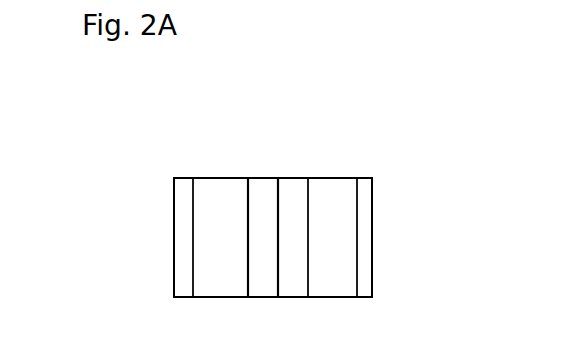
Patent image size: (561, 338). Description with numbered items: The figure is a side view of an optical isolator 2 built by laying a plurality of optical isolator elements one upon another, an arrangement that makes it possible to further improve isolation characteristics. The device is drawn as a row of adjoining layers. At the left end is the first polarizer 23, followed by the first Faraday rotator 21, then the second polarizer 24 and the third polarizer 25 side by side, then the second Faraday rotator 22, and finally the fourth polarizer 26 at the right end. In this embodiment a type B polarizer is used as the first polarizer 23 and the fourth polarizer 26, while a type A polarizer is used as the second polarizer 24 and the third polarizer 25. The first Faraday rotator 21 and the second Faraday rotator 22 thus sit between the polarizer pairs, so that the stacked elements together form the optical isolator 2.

The optical isolator 2 is at (421, 67).
The first Faraday rotator 21 is at (215, 192).
The second Faraday rotator 22 is at (330, 192).
The first polarizer 23 is at (180, 193).
The second polarizer 24 is at (270, 192).
The third polarizer 25 is at (302, 192).
The fourth polarizer 26 is at (363, 190).